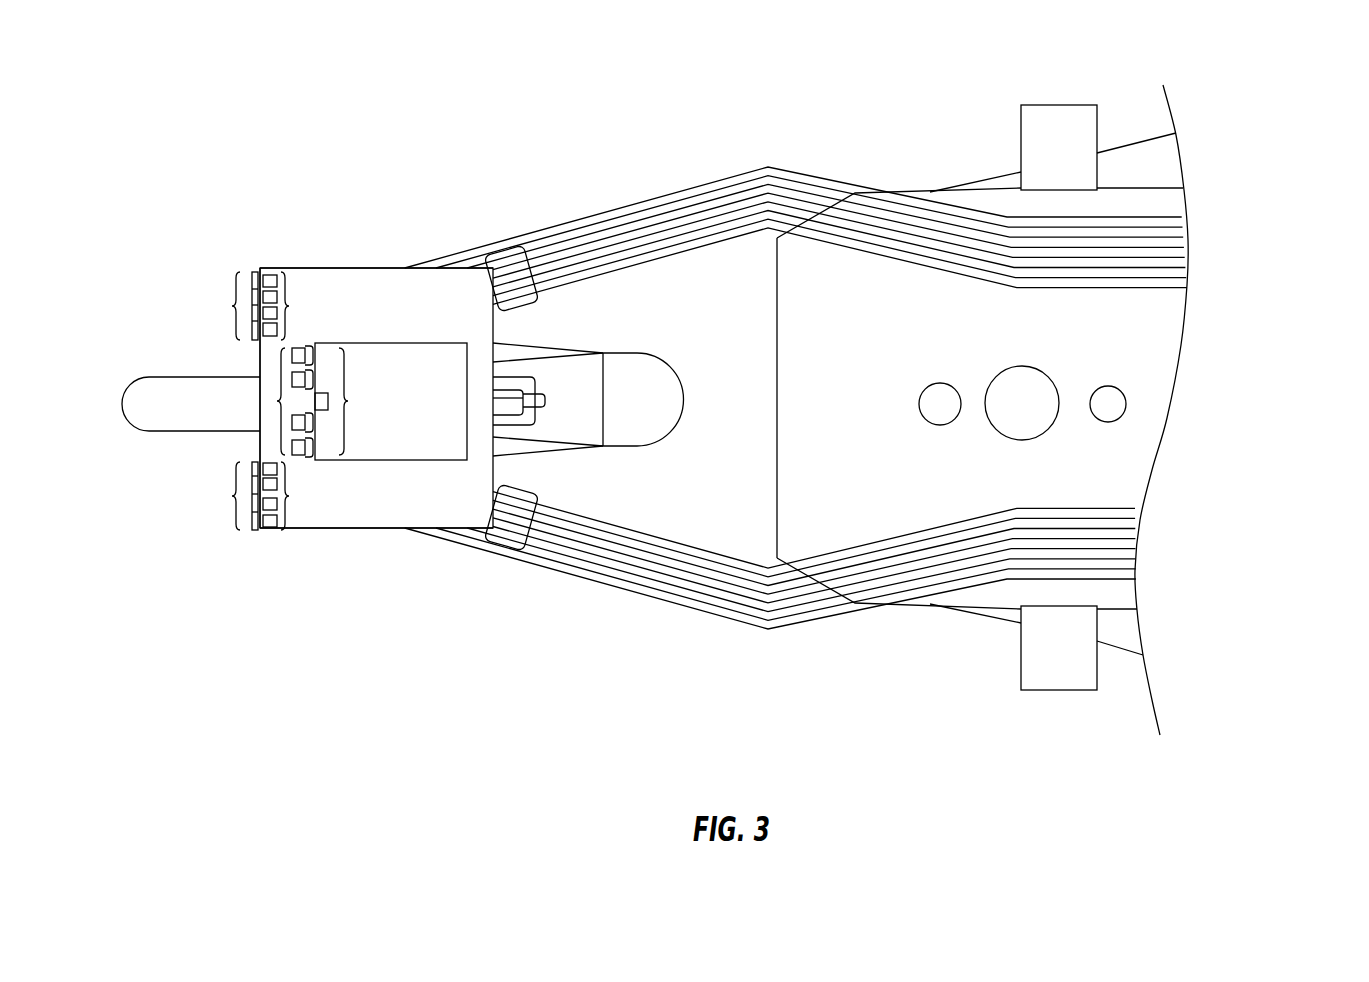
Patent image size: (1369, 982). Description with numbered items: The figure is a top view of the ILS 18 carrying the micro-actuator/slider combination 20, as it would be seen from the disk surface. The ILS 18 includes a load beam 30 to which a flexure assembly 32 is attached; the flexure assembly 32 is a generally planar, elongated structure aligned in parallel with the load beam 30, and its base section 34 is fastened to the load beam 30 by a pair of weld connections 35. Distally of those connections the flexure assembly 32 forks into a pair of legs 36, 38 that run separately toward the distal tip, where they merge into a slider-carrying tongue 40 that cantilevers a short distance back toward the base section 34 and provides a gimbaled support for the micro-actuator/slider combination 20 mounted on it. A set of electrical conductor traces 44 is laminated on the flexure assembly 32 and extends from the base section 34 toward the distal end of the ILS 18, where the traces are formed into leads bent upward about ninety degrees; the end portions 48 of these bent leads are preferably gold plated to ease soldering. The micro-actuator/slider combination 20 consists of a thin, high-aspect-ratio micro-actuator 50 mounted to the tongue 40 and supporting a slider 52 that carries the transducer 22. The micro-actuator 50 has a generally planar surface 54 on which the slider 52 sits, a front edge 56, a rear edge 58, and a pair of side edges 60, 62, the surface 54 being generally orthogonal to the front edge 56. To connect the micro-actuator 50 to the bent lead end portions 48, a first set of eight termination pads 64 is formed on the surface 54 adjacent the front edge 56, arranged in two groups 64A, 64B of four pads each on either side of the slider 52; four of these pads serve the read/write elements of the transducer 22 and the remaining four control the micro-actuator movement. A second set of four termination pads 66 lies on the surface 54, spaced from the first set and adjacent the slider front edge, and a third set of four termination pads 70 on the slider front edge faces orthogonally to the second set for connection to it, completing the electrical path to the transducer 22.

The ILS 18 is at (1242, 168).
The micro-actuator/slider combination 20 is at (198, 255).
The transducer 22 is at (321, 392).
The load beam 30 is at (1127, 632).
The flexure assembly 32 is at (983, 182).
The base section 34 is at (1158, 372).
The weld connections 35 is at (937, 386).
The leg 36 is at (623, 287).
The leg 38 is at (623, 510).
The slider-carrying tongue 40 is at (538, 420).
The electrical conductor traces 44 is at (690, 213).
The end portions 48 is at (217, 401).
The micro-actuator 50 is at (368, 280).
The slider 52 is at (413, 360).
The generally planar surface 54 is at (430, 509).
The front edge 56 is at (258, 368).
The rear edge 58 is at (495, 463).
The side edge 60 is at (308, 268).
The side edge 62 is at (327, 531).
The first set of termination pads 64 is at (270, 265).
The group of termination pads 64A is at (302, 306).
The group of termination pads 64B is at (302, 496).
The second set of termination pads 66 is at (277, 400).
The third set of termination pads 70 is at (331, 401).